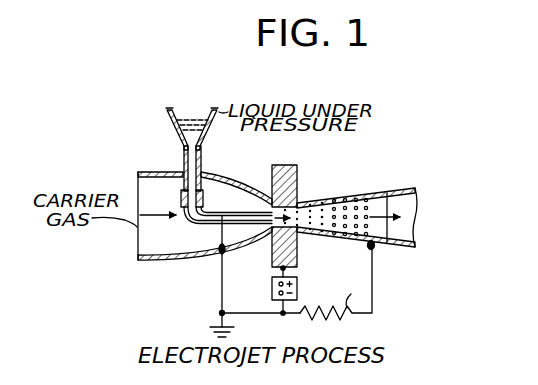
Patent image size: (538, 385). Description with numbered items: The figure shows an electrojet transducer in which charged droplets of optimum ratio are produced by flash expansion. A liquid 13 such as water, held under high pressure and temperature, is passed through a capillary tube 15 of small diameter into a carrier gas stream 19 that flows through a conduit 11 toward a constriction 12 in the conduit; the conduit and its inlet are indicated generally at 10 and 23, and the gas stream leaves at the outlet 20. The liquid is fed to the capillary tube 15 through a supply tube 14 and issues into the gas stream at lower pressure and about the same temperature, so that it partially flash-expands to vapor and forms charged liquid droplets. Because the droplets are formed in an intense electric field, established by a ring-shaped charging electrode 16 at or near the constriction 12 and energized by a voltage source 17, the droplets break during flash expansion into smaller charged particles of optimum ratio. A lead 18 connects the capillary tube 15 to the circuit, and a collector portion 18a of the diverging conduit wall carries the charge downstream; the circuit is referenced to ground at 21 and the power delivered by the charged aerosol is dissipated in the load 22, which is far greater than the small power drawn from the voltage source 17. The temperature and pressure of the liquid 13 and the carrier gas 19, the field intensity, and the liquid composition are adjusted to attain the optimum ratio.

The carrier gas conduit 10 is at (134, 173).
The conduit 11 is at (160, 257).
The constriction 12 is at (300, 203).
The liquid 13 is at (196, 108).
The liquid supply tube 14 is at (202, 160).
The capillary tube 15 is at (217, 222).
The charging electrode 16 is at (298, 168).
The voltage source 17 is at (301, 278).
The nozzle electrode lead 18 is at (251, 232).
The collector electrode wall 18a is at (326, 205).
The carrier gas stream 19 is at (138, 250).
The outlet 20 is at (370, 203).
The ground connection 21 is at (232, 322).
The load 22 is at (337, 328).
The conduit wall 23 is at (184, 162).